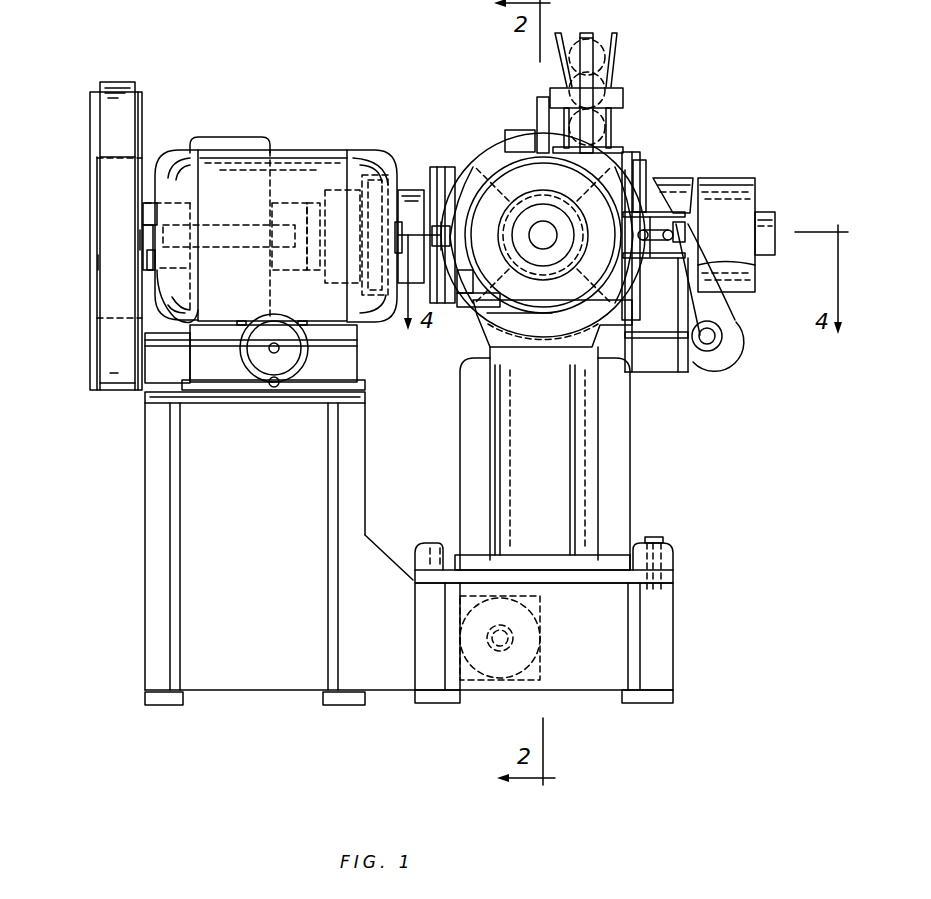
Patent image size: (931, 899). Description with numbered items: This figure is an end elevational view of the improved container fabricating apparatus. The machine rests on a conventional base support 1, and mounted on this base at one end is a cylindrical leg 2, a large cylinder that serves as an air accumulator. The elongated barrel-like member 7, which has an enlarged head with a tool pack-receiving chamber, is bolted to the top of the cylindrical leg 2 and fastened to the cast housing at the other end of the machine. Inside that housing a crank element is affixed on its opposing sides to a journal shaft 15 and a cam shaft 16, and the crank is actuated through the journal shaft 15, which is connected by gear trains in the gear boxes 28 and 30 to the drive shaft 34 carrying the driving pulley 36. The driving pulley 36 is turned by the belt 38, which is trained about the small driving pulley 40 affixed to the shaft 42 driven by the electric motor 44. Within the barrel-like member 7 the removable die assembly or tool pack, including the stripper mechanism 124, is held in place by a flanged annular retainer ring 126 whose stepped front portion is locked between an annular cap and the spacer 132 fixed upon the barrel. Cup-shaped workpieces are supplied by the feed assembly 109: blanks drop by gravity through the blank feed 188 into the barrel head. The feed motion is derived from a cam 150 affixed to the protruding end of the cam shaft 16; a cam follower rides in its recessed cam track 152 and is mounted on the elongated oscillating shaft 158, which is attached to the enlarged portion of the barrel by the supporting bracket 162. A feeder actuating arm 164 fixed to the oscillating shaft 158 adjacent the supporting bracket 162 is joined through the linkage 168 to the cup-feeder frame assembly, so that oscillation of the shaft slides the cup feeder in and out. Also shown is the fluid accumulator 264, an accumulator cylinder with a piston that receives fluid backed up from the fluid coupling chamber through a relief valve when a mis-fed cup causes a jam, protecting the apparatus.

The base support 1 is at (478, 700).
The cylindrical leg 2 is at (565, 466).
The barrel-like member 7 is at (486, 140).
The journal shaft 15 is at (426, 165).
The cam shaft 16 is at (770, 212).
The gear box 28 is at (410, 190).
The gear box 30 is at (226, 137).
The drive shaft 34 is at (148, 203).
The driving pulley 36 is at (95, 106).
The belt 38 is at (120, 82).
The small driving pulley 40 is at (95, 263).
The shaft 42 is at (140, 240).
The electric motor 44 is at (160, 315).
The feed assembly 109 is at (629, 207).
The stripper mechanism 124 is at (537, 224).
The flanged annular retainer ring 126 is at (508, 260).
The spacer 132 is at (480, 322).
The cam 150 is at (722, 177).
The recessed cam track 152 is at (700, 178).
The elongated oscillating shaft 158 is at (708, 336).
The supporting bracket 162 is at (660, 370).
The feeder actuating arm 164 is at (757, 268).
The linkage 168 is at (688, 230).
The blank feed 188 is at (612, 70).
The fluid accumulator 264 is at (505, 655).